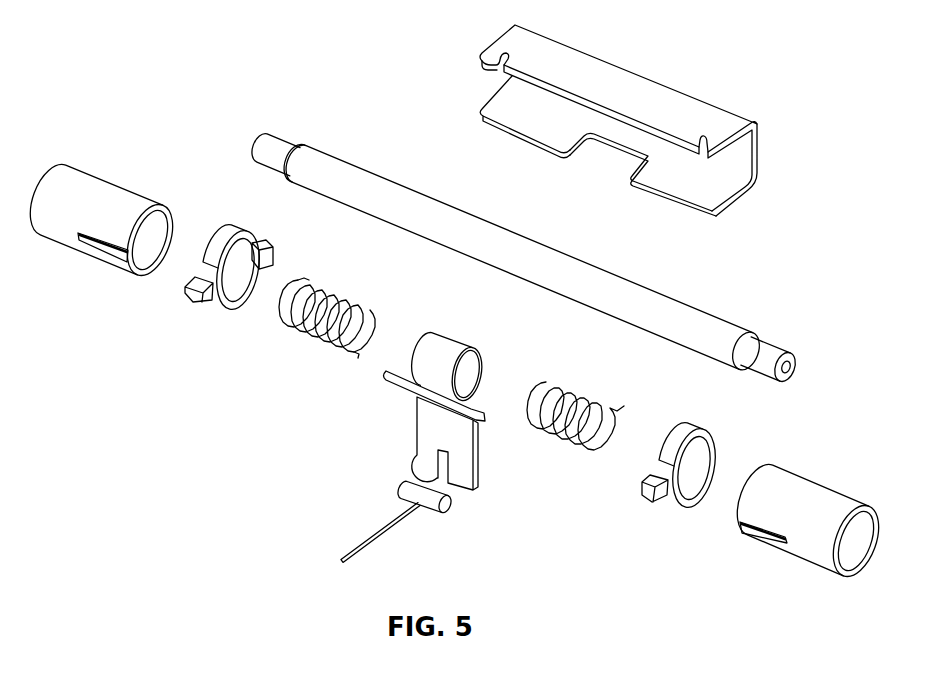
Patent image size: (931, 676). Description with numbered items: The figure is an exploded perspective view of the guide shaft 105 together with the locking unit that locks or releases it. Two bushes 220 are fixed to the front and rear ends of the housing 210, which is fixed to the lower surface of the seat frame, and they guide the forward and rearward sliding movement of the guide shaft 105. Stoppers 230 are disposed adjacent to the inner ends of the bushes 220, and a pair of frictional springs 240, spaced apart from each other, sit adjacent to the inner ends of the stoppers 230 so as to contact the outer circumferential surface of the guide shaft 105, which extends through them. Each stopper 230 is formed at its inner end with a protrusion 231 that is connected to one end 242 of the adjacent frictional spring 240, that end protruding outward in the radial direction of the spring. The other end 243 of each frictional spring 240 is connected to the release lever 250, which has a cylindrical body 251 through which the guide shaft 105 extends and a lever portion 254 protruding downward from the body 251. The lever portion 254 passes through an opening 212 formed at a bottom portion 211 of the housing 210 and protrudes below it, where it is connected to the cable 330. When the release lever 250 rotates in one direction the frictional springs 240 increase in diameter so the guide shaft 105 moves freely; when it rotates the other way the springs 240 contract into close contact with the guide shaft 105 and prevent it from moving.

The guide shaft 105 is at (720, 327).
The housing 210 is at (545, 126).
The bottom portion 211 is at (498, 107).
The opening 212 is at (580, 145).
The bush 220 is at (113, 258).
The stopper 230 is at (453, 320).
The protrusion 231 is at (263, 240).
The frictional spring 240 is at (440, 365).
The one end of frictional spring 242 is at (313, 278).
The other end of frictional spring 243 is at (359, 352).
The release lever 250 is at (404, 390).
The cylindrical body 251 is at (468, 332).
The lever portion 254 is at (423, 438).
The cable 330 is at (355, 548).